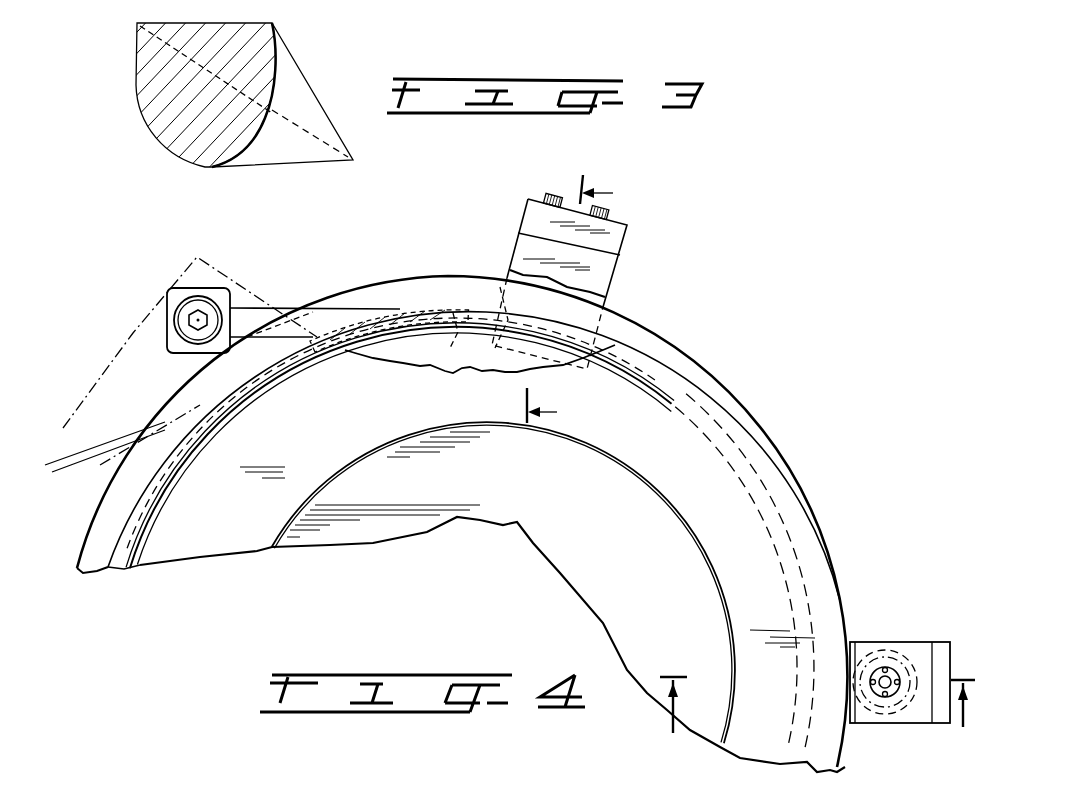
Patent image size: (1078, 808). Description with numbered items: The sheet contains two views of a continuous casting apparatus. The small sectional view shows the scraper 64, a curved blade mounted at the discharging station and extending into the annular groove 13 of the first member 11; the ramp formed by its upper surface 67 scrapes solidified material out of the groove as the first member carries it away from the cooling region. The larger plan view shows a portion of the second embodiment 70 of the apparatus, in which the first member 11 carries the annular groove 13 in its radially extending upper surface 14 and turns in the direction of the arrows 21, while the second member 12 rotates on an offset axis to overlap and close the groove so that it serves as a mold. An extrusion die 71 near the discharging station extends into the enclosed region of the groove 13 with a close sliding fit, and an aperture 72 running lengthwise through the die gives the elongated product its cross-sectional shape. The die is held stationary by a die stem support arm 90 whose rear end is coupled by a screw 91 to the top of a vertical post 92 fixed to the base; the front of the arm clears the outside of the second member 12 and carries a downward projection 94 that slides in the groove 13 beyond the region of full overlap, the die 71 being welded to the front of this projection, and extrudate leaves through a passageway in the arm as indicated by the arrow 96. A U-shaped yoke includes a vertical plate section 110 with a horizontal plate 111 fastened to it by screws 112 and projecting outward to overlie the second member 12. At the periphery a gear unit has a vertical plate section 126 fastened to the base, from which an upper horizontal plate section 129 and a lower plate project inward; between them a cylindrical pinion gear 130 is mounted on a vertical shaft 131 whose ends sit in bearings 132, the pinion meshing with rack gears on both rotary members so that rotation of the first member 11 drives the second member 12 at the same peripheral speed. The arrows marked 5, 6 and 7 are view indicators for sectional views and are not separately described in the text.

In FIG. 3, the scraper 64 is at (258, 28).
In FIG. 3, the upper surface 67 is at (305, 108).
In FIG. 4, the groove 5 is at (140, 527).
In FIG. 4, the section line 6- 6 is at (580, 309).
In FIG. 4, the section line 7- 7 is at (817, 724).
In FIG. 4, the first member 11 is at (650, 323).
In FIG. 4, the second member 12 is at (749, 404).
In FIG. 4, the annular groove 13 is at (120, 568).
In FIG. 4, the upper surface 14 is at (102, 526).
In FIG. 4, the arrows 21 is at (362, 421).
In FIG. 4, the second embodiment 70 is at (692, 220).
In FIG. 4, the extrusion die 71 is at (500, 287).
In FIG. 4, the aperture 72 is at (453, 313).
In FIG. 4, the die stem support arm 90 is at (298, 312).
In FIG. 4, the screw 91 is at (187, 308).
In FIG. 4, the vertical post 92 is at (213, 288).
In FIG. 4, the downward projection 94 is at (347, 327).
In FIG. 4, the arrow 96 is at (95, 440).
In FIG. 4, the vertical plate section 110 is at (625, 250).
In FIG. 4, the horizontal plate 111 is at (612, 281).
In FIG. 4, the screws 112 is at (552, 196).
In FIG. 4, the vertical plate section 126 is at (942, 647).
In FIG. 4, the upper horizontal plate section 129 is at (900, 642).
In FIG. 4, the pinion gear 130 is at (867, 655).
In FIG. 4, the vertical shaft 131 is at (893, 695).
In FIG. 4, the bearings 132 is at (875, 697).